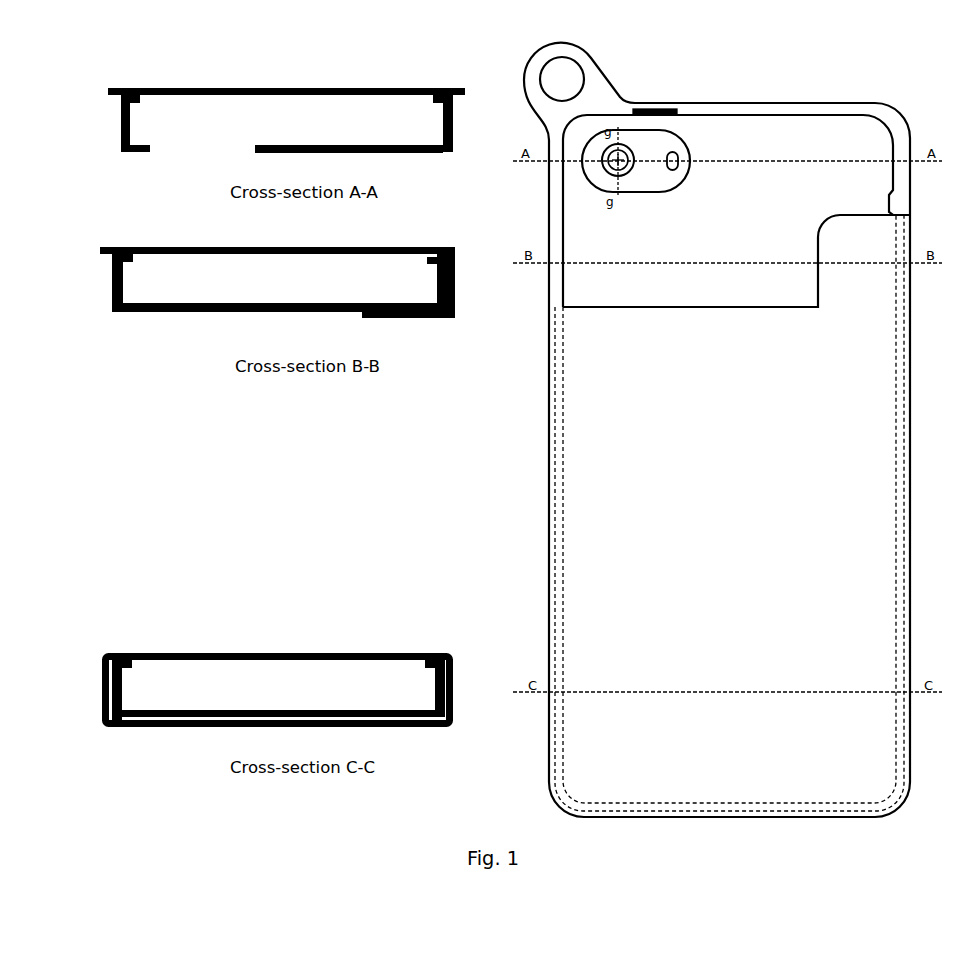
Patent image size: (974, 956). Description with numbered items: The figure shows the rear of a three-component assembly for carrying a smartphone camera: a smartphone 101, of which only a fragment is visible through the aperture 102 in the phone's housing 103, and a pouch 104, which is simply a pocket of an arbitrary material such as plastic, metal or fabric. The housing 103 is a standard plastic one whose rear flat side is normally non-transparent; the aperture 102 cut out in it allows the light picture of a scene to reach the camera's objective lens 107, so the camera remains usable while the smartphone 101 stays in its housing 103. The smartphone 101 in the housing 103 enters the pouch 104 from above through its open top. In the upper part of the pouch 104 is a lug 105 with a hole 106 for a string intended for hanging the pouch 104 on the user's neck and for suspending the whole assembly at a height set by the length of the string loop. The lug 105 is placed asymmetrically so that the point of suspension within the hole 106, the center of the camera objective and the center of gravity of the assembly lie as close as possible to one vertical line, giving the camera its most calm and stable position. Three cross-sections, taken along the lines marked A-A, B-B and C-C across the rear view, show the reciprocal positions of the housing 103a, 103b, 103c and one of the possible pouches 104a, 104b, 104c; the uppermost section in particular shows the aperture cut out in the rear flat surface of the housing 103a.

The smartphone 101 is at (641, 141).
The aperture 102 is at (681, 140).
The housing 103 is at (734, 238).
The pouch 104 is at (762, 553).
The lug 105 is at (595, 100).
The hole 106 is at (567, 77).
The camera objective lens 107 is at (616, 165).
The housing in cross-section A-A 103a is at (325, 161).
The pouch in cross-section A-A 104a is at (293, 87).
The housing in cross-section B-B 103b is at (193, 314).
The pouch in cross-section B-B 104b is at (405, 325).
The housing in cross-section C-C 103c is at (182, 709).
The pouch in cross-section C-C 104c is at (353, 734).